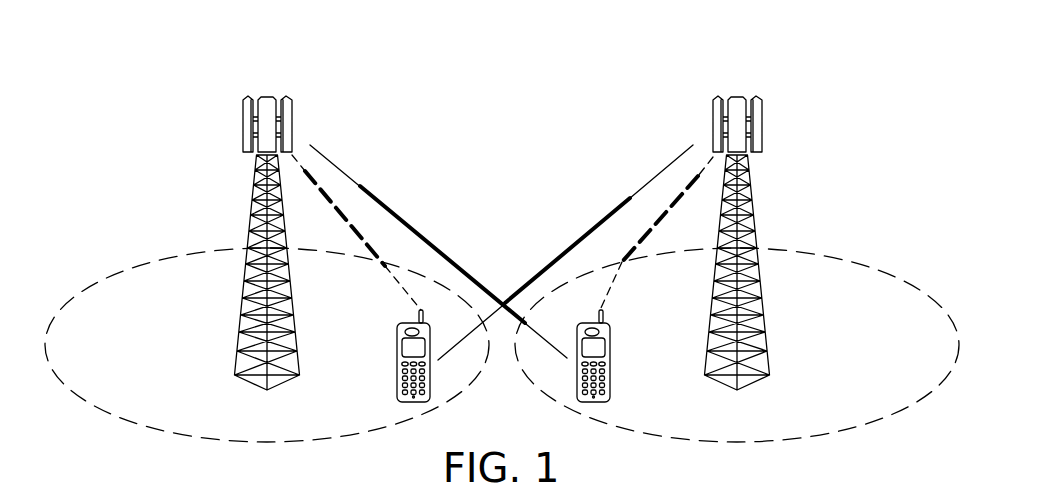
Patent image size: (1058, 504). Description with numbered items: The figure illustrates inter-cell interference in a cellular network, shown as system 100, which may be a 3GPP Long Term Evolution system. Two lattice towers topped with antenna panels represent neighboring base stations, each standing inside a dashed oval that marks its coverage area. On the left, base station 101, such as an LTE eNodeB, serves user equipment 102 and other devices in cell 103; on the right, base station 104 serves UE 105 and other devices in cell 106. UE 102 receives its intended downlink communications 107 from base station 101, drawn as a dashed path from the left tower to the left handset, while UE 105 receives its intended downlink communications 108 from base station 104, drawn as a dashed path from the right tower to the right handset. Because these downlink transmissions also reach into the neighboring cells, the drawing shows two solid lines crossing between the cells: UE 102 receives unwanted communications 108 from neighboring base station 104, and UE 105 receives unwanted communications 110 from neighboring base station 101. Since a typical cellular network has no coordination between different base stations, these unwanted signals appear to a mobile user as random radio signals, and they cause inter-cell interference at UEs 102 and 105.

The system 100 is at (298, 70).
The base station 101 is at (250, 382).
The user equipment 102 is at (397, 388).
The cell 103 is at (136, 258).
The base station 104 is at (755, 382).
The user equipment 105 is at (610, 388).
The cell 106 is at (866, 258).
The downlink communications 107 is at (392, 273).
The downlink communications 108 is at (630, 196).
The unwanted communications 110 is at (397, 217).